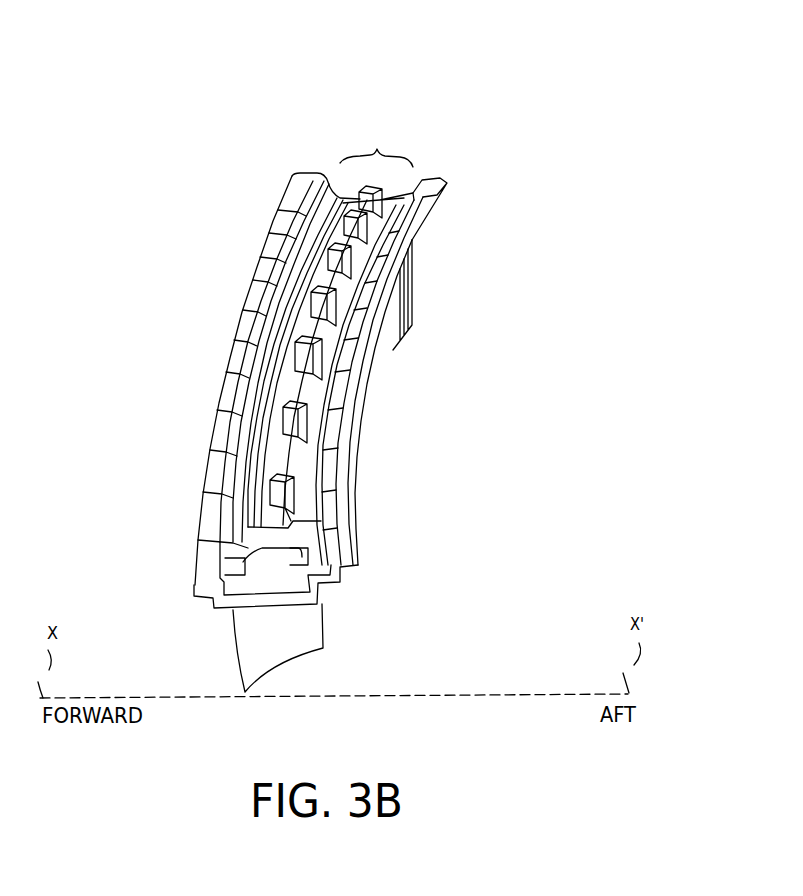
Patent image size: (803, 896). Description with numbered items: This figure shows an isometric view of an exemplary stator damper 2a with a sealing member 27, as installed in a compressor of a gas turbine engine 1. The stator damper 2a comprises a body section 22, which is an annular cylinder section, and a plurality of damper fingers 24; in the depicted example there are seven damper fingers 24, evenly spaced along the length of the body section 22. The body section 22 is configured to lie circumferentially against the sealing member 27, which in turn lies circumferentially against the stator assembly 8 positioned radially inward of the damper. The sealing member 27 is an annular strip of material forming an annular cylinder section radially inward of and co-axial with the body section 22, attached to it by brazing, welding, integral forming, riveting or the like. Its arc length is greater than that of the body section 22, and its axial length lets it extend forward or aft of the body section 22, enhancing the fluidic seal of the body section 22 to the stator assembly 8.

The gas turbine engine 1 is at (424, 90).
The stator damper 2a is at (376, 146).
The body section 22 is at (303, 286).
The damper finger 24 is at (366, 203).
The sealing member 27 is at (300, 520).
The stator assembly 8 is at (305, 625).